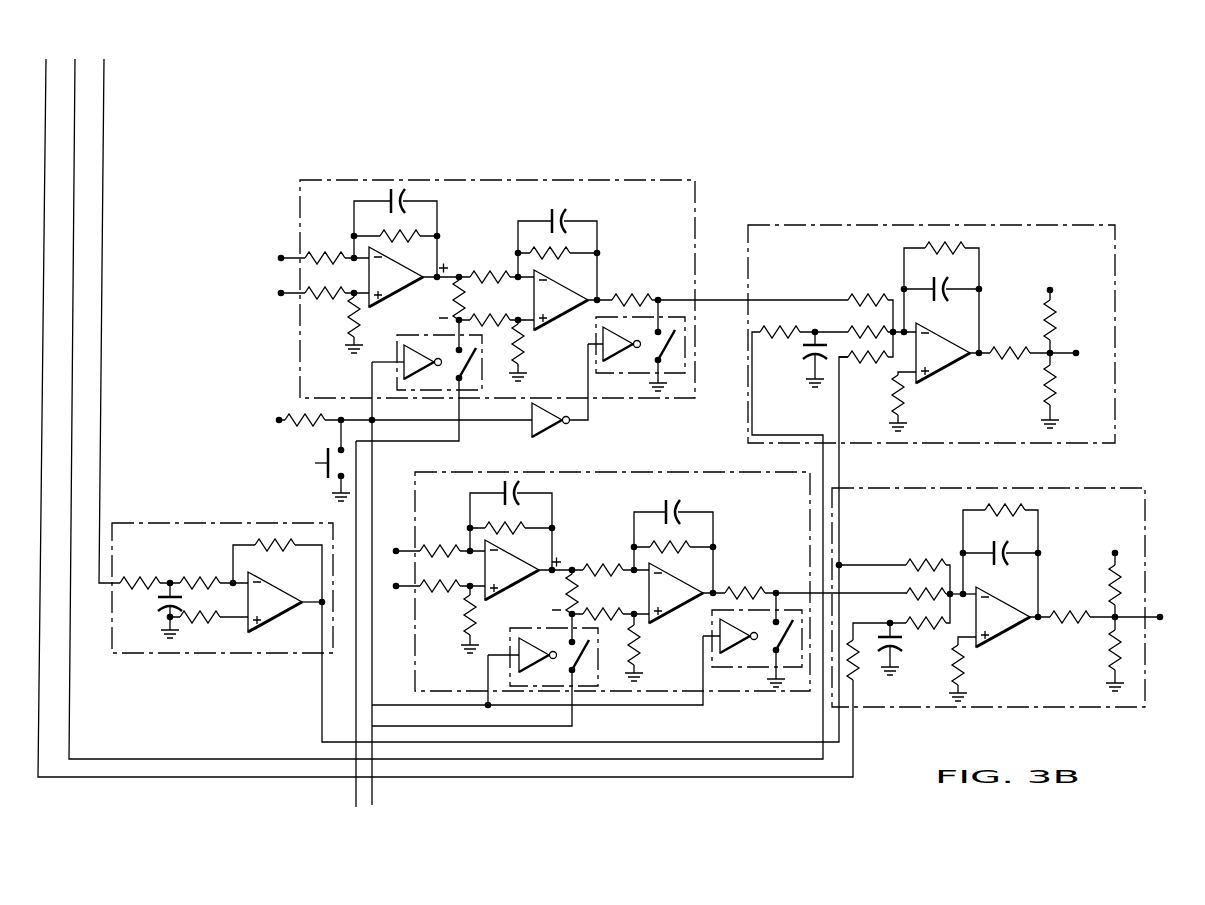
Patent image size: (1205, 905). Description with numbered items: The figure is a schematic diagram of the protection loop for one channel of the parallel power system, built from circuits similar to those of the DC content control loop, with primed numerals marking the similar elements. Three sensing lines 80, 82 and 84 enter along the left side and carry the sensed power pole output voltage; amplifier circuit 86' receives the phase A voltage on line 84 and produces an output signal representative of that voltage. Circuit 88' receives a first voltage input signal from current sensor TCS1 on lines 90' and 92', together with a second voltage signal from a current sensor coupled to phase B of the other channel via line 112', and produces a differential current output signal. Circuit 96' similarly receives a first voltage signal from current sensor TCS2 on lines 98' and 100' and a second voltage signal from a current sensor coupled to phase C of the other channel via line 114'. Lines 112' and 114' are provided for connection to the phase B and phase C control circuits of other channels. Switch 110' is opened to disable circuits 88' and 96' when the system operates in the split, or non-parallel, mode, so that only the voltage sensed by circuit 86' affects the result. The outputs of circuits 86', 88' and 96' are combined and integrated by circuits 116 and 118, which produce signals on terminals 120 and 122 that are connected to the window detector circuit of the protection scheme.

The voltage sensing line 80 is at (46, 135).
The voltage sensing line 82 is at (75, 168).
The voltage sensing line 84 is at (104, 220).
The amplifier circuit 86' is at (480, 549).
The differential current circuit 88' is at (564, 292).
The current sensor input line 90' is at (261, 248).
The current sensor input line 92' is at (261, 305).
The differential current circuit 96' is at (639, 582).
The current sensor input line 98' is at (391, 534).
The current sensor input line 100' is at (396, 606).
The switch 110' is at (411, 448).
The phase B connection line 112' is at (311, 624).
The phase C connection line 114' is at (305, 583).
The combining and integrating circuit 116 is at (870, 225).
The combining and integrating circuit 118 is at (1030, 707).
The output terminal 120 is at (1092, 342).
The output terminal 122 is at (1177, 603).